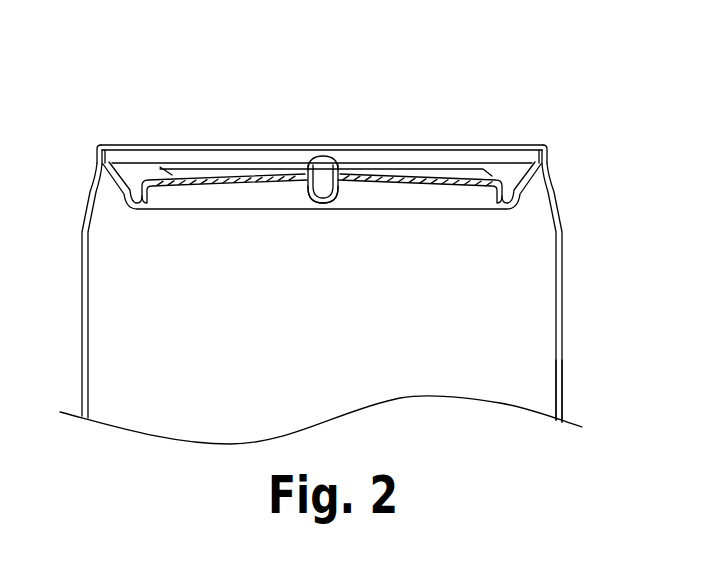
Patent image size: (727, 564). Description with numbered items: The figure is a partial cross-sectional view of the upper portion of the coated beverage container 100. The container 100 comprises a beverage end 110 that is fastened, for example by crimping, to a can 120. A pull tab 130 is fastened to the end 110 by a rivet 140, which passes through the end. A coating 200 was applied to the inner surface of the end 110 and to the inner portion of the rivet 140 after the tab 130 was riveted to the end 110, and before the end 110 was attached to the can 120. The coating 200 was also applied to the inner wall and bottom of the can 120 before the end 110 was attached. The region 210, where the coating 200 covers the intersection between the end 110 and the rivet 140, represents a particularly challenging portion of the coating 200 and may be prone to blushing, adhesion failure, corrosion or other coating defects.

The coated beverage container 100 is at (504, 43).
The beverage end 110 is at (504, 146).
The can 120 is at (566, 248).
The pull tab 130 is at (197, 161).
The rivet 140 is at (324, 166).
The coating 200 is at (556, 372).
The region 210 is at (299, 192).